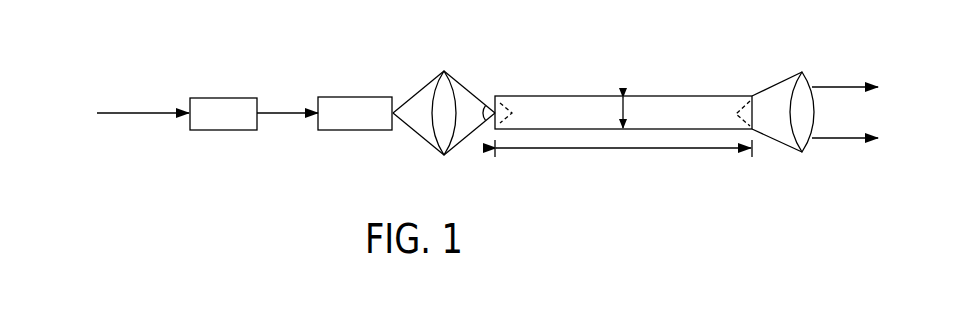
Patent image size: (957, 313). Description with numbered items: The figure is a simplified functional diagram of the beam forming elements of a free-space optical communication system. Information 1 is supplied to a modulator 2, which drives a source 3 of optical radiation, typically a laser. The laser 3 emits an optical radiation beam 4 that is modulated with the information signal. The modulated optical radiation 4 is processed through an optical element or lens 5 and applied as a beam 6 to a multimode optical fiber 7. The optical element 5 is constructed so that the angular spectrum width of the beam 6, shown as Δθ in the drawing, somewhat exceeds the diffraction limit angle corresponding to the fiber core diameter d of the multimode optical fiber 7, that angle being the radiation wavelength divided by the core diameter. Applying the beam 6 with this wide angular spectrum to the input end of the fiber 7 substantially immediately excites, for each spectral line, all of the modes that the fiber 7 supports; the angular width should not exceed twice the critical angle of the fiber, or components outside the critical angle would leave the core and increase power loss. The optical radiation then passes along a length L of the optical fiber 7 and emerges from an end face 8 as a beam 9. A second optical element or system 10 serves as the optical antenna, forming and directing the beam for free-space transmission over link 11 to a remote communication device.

The information 1 is at (140, 115).
The modulator 2 is at (223, 130).
The source of optical radiation 3 is at (353, 130).
The optical radiation beam 4 is at (423, 88).
The optical element 5 is at (444, 155).
The beam 6 is at (469, 88).
The multimode optical fiber 7 is at (610, 96).
The end face 8 is at (752, 98).
The beam 9 is at (783, 145).
The second optical element 10 is at (802, 153).
The link 11 is at (850, 87).